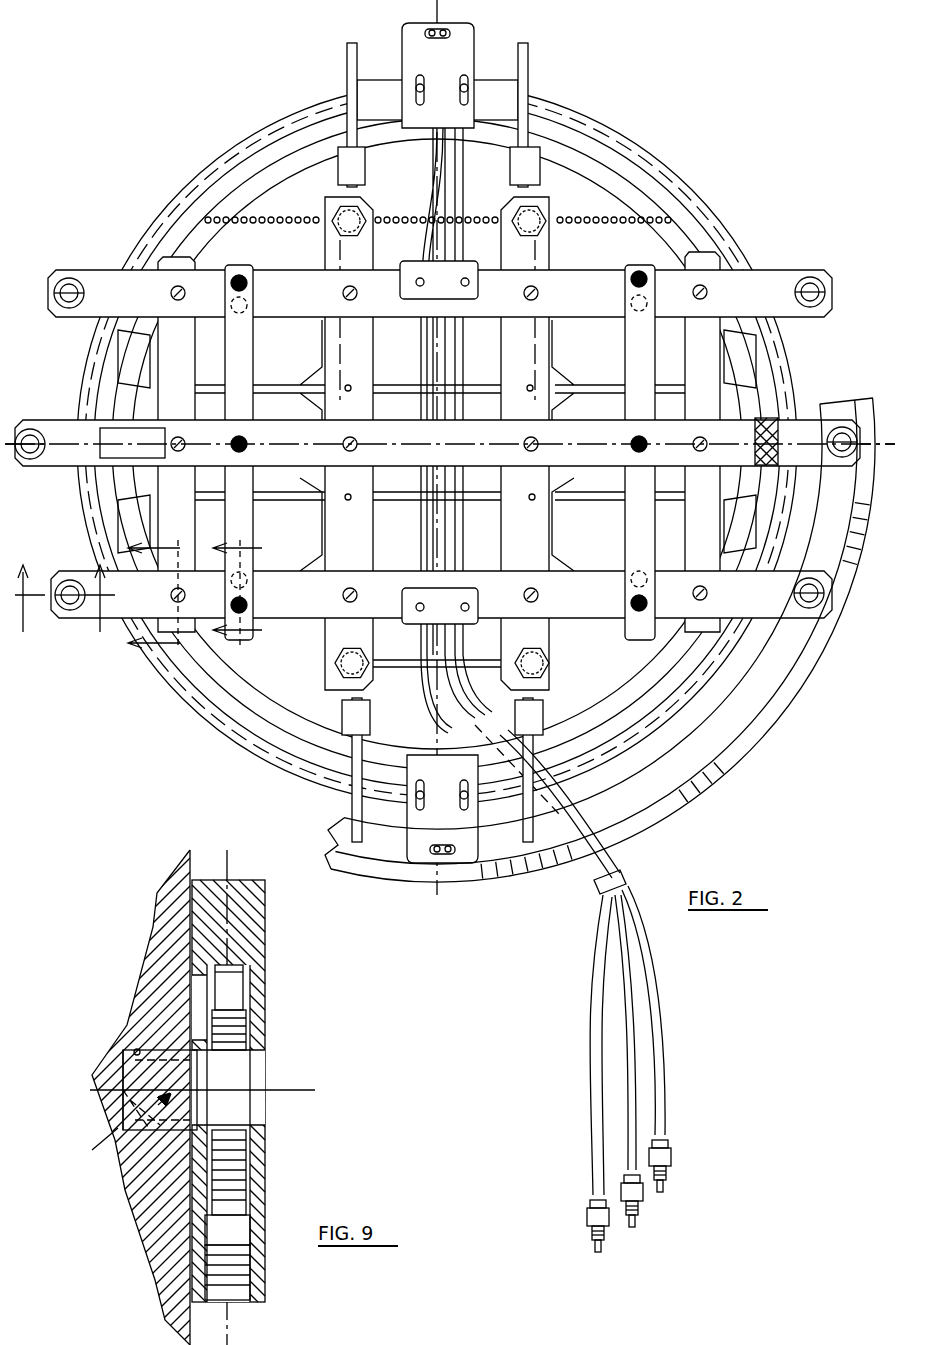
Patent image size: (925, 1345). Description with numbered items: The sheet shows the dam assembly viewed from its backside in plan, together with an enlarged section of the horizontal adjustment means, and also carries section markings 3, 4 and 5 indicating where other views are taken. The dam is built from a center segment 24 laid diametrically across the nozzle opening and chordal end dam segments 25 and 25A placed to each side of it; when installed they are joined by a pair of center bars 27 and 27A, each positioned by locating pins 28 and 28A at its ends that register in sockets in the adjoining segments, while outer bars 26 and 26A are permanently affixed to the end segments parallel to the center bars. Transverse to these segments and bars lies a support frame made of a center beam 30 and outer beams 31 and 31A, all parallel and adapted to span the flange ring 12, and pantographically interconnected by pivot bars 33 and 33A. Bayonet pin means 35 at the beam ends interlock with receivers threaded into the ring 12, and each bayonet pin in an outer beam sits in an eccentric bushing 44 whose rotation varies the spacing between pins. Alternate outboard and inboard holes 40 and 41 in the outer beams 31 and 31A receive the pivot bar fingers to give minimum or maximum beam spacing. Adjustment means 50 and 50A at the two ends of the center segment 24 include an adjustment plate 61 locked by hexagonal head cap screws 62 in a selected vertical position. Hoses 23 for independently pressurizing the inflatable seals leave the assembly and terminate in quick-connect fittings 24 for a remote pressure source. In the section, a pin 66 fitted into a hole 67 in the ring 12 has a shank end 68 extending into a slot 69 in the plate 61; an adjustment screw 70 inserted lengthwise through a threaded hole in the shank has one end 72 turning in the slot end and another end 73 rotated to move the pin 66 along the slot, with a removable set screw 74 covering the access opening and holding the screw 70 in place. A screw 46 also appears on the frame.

In FIG. 2, the flange ring 12 is at (705, 780).
In FIG. 9, the flange ring 12 is at (162, 892).
In FIG. 2, the hoses 23 is at (655, 1000).
In FIG. 2, the quick-connect fittings 24 is at (670, 1165).
In FIG. 2, the chordal end dam segment 25 is at (268, 684).
In FIG. 2, the chordal end dam segment 25A is at (598, 696).
In FIG. 2, the outer bar 26 is at (158, 360).
In FIG. 2, the outer bar 26A is at (720, 358).
In FIG. 2, the center bar 27 is at (396, 268).
In FIG. 2, the center bar 27A is at (549, 240).
In FIG. 2, the locating pin 28 is at (349, 208).
In FIG. 2, the locating pin 28A is at (515, 215).
In FIG. 2, the center beam 30 is at (405, 410).
In FIG. 2, the outer beam 31 is at (382, 572).
In FIG. 2, the outer beam 31A is at (310, 278).
In FIG. 2, the pivot bar 33 is at (250, 520).
In FIG. 2, the pivot bar 33A is at (630, 535).
In FIG. 2, the bayonet pin means 35 is at (835, 296).
In FIG. 2, the outboard hole 40 is at (238, 275).
In FIG. 2, the inboard hole 41 is at (250, 312).
In FIG. 2, the eccentric bushing 44 is at (69, 278).
In FIG. 2, the screw 46 is at (176, 286).
In FIG. 2, the adjustment means 50 is at (485, 850).
In FIG. 2, the adjustment means 50A is at (463, 95).
In FIG. 2, the hexagonal head cap screws 62 is at (462, 86).
In FIG. 2, the hole 67 is at (450, 30).
In FIG. 9, the hole 67 is at (137, 1048).
In FIG. 9, the adjustment plate 61 is at (265, 928).
In FIG. 9, the pin 66 is at (128, 1128).
In FIG. 9, the shank end 68 is at (266, 1086).
In FIG. 9, the slot 69 is at (250, 1185).
In FIG. 9, the adjustment screw 70 is at (246, 1035).
In FIG. 9, the end of adjustment screw 72 is at (243, 990).
In FIG. 9, the other end of adjustment screw 73 is at (250, 1225).
In FIG. 9, the removable set screw 74 is at (250, 1295).
In FIG. 2, the section line 3 is at (231, 590).
In FIG. 2, the section line 4 is at (65, 607).
In FIG. 2, the section line 5 is at (146, 593).